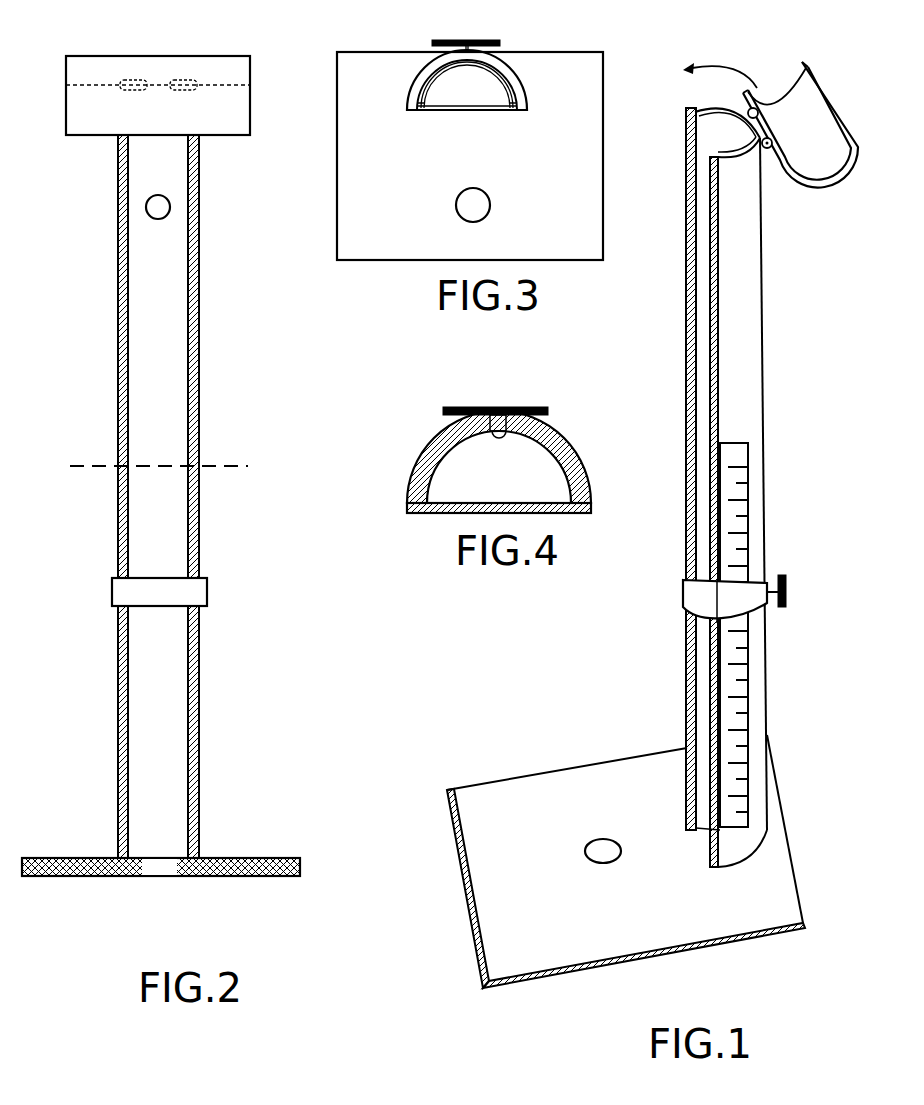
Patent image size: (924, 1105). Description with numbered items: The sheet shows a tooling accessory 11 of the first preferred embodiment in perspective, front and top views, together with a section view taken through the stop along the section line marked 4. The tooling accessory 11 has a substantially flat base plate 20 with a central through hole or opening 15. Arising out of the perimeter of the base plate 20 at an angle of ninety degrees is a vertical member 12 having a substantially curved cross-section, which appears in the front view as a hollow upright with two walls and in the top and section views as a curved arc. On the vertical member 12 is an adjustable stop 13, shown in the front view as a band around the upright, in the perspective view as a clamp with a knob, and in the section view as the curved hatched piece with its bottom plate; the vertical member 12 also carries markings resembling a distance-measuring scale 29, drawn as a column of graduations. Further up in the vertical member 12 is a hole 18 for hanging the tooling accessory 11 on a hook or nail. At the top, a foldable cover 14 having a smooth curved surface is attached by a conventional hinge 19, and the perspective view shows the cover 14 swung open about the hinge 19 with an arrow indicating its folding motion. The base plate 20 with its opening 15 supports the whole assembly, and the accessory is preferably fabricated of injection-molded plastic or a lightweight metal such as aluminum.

In FIG. 2, the tooling accessory 11 is at (216, 396).
In FIG. 1, the tooling accessory 11 is at (770, 403).
In FIG. 2, the vertical member 12 is at (208, 200).
In FIG. 3, the vertical member 12 is at (420, 87).
In FIG. 2, the adjustable stop 13 is at (224, 592).
In FIG. 3, the adjustable stop 13 is at (528, 88).
In FIG. 4, the adjustable stop 13 is at (398, 507).
In FIG. 1, the adjustable stop 13 is at (676, 588).
In FIG. 2, the foldable cover 14 is at (236, 56).
In FIG. 1, the foldable cover 14 is at (797, 82).
In FIG. 3, the central through hole 15 is at (445, 203).
In FIG. 1, the central through hole 15 is at (583, 855).
In FIG. 2, the hole 18 is at (158, 232).
In FIG. 2, the hinge 19 is at (183, 72).
In FIG. 1, the hinge 19 is at (768, 158).
In FIG. 2, the base plate 20 is at (283, 858).
In FIG. 3, the base plate 20 is at (572, 205).
In FIG. 1, the base plate 20 is at (552, 798).
In FIG. 1, the distance-measuring scale 29 is at (755, 540).
In FIG. 2, the section line 4- 4 is at (248, 500).